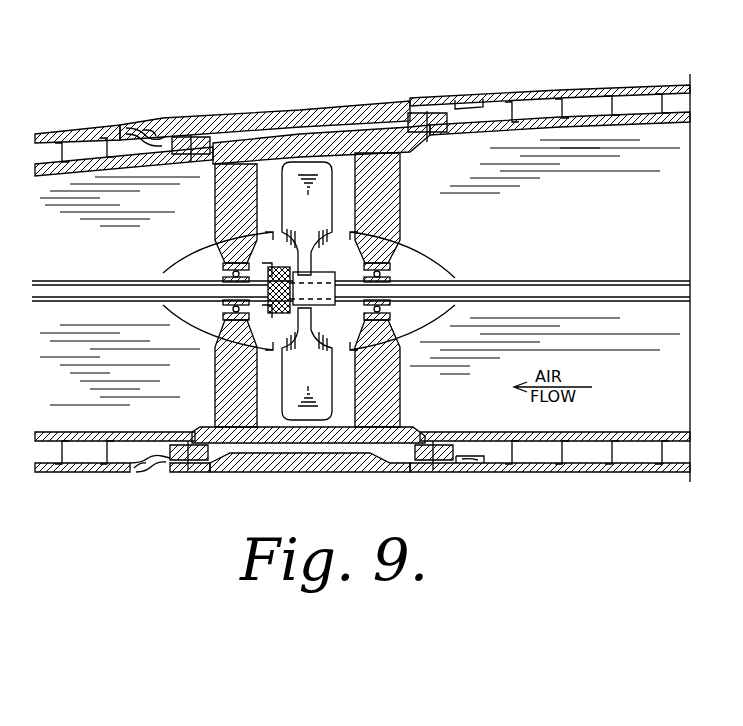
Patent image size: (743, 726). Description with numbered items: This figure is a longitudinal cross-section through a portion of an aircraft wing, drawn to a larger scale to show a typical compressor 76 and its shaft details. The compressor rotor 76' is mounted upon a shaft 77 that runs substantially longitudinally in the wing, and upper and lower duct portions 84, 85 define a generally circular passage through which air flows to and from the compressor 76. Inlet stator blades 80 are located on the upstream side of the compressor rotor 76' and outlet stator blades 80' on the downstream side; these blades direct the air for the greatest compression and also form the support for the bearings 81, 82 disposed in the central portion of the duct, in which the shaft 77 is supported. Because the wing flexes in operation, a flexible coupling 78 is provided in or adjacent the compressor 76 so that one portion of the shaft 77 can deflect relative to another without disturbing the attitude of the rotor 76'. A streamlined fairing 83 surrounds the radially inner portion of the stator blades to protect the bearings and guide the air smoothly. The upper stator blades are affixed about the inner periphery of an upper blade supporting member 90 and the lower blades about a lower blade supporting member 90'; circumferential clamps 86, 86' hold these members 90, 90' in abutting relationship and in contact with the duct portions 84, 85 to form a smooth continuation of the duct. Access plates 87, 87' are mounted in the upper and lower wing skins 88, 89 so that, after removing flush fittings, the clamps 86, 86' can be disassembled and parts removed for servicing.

The compressor 76 is at (176, 91).
The compressor rotor 76' is at (298, 291).
The shaft 77 is at (110, 284).
The flexible coupling 78 is at (282, 268).
The inlet stator blades 80 is at (393, 290).
The outlet stator blades 80' is at (221, 295).
The bearing 81 is at (391, 305).
The bearing 82 is at (224, 306).
The streamlined fairing 83 is at (416, 262).
The upper duct portion 84 is at (678, 123).
The lower duct portion 85 is at (666, 433).
The circumferential clamp 86 is at (437, 472).
The circumferential clamp 86' is at (189, 471).
The access plate 87 is at (265, 107).
The access plate 87' is at (310, 478).
The upper wing skin 88 is at (655, 89).
The lower wing skin 89 is at (598, 472).
The upper blade supporting member 90 is at (309, 125).
The lower blade supporting member 90' is at (308, 465).